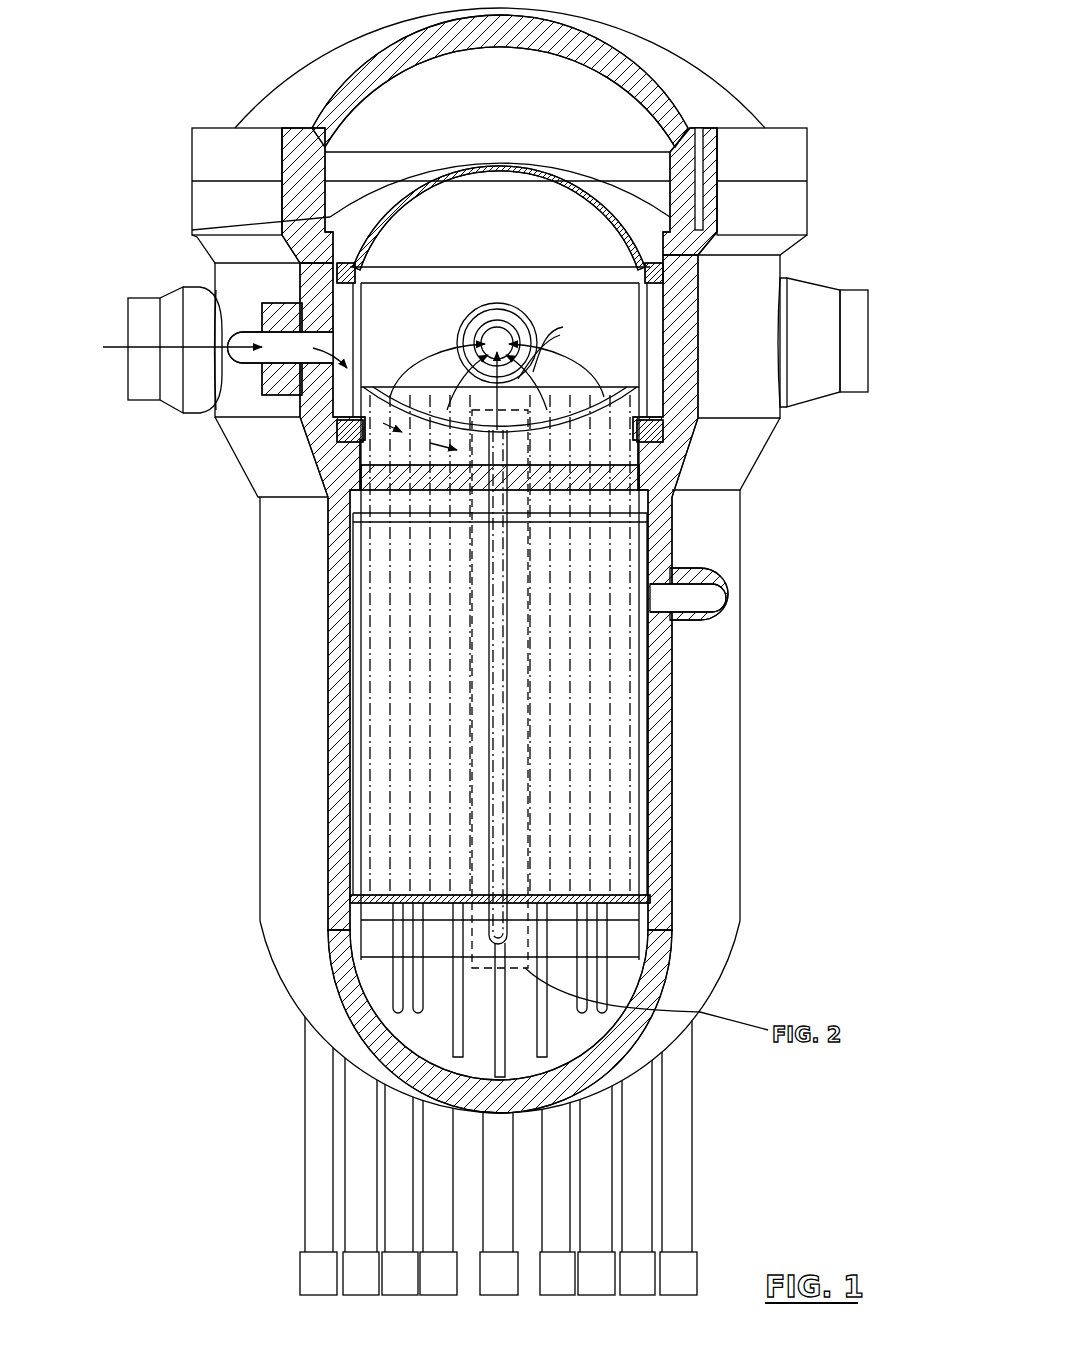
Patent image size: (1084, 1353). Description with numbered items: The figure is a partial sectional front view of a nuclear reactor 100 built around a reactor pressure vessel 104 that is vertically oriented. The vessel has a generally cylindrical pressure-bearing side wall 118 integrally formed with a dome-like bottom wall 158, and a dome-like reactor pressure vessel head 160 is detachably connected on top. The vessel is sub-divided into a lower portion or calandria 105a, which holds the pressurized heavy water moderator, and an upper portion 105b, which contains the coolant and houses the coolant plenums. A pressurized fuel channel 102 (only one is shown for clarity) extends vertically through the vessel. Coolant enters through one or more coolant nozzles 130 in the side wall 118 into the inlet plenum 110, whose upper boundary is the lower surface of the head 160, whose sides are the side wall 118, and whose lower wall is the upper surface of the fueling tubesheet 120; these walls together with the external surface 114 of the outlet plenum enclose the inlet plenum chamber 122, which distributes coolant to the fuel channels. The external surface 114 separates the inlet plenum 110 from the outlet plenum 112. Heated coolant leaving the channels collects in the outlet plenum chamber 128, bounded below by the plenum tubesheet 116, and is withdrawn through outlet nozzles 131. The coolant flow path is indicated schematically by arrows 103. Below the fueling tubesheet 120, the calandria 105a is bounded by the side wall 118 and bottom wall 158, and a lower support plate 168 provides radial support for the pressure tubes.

The nuclear reactor 100 is at (810, 97).
The fuel channel 102 is at (486, 771).
The arrows 103 is at (104, 350).
The reactor pressure vessel 104 is at (758, 684).
The calandria 105a is at (752, 806).
The upper portion 105b is at (820, 180).
The inlet plenum 110 is at (500, 704).
The outlet plenum 112 is at (395, 238).
The external surface 114 is at (652, 440).
The plenum tubesheet 116 is at (643, 396).
The side wall 118 is at (330, 453).
The fueling tubesheet 120 is at (377, 490).
The inlet plenum chamber 122 is at (397, 611).
The outlet plenum chamber 128 is at (512, 236).
The coolant nozzle 130 is at (224, 330).
The outlet nozzle 131 is at (146, 390).
The bottom wall 158 is at (323, 1000).
The reactor pressure vessel head 160 is at (382, 67).
The lower support plate 168 is at (351, 896).